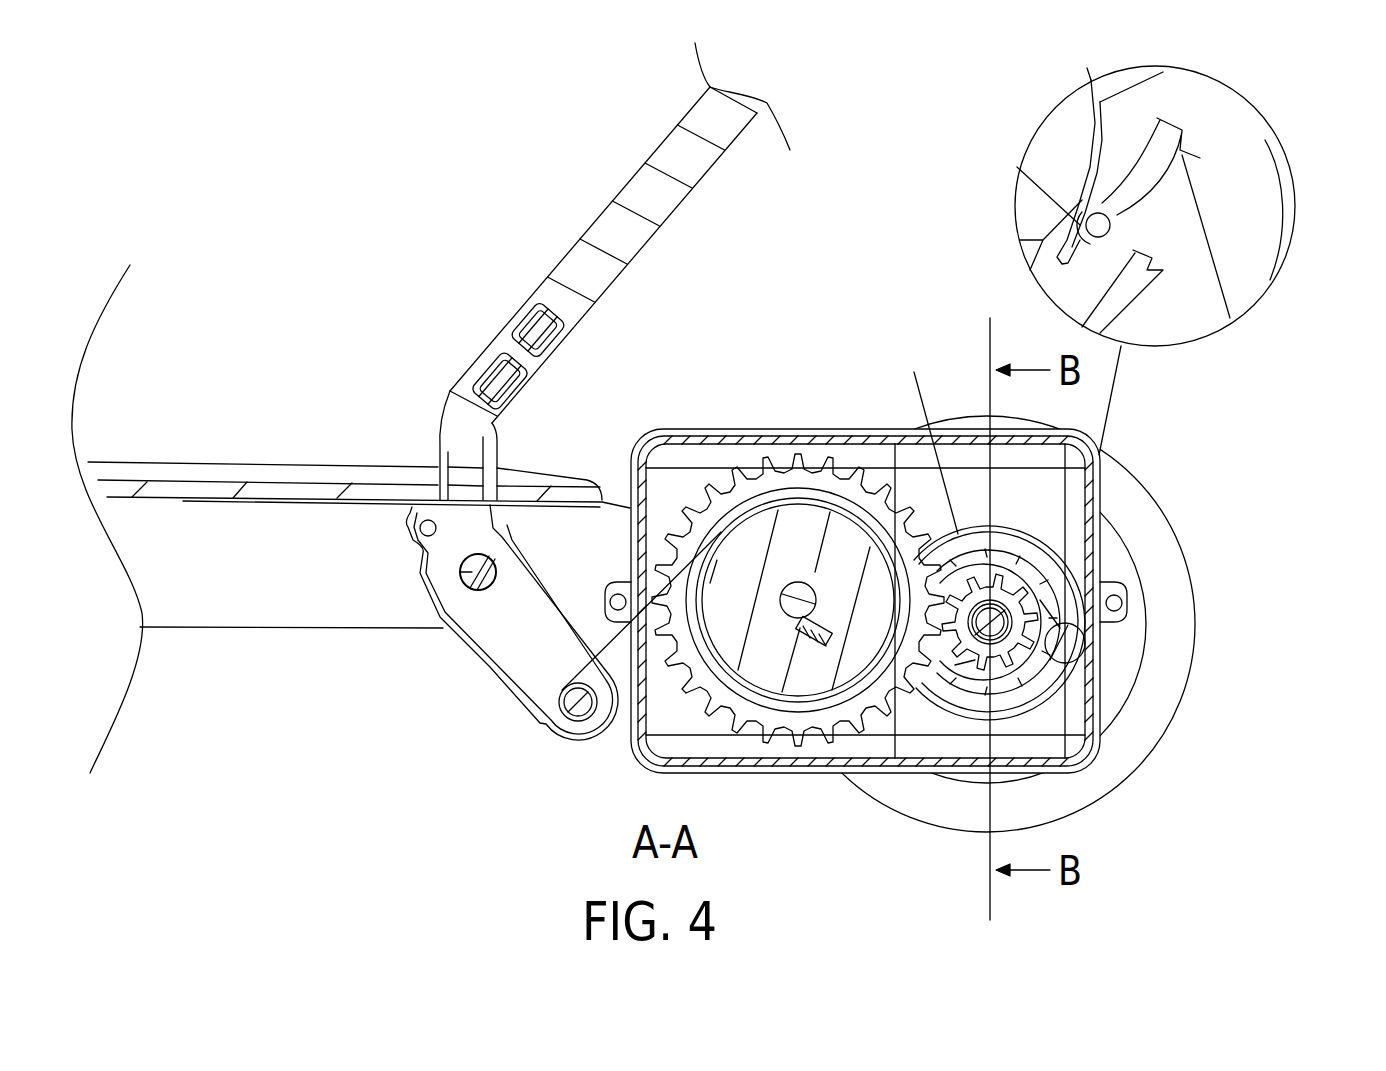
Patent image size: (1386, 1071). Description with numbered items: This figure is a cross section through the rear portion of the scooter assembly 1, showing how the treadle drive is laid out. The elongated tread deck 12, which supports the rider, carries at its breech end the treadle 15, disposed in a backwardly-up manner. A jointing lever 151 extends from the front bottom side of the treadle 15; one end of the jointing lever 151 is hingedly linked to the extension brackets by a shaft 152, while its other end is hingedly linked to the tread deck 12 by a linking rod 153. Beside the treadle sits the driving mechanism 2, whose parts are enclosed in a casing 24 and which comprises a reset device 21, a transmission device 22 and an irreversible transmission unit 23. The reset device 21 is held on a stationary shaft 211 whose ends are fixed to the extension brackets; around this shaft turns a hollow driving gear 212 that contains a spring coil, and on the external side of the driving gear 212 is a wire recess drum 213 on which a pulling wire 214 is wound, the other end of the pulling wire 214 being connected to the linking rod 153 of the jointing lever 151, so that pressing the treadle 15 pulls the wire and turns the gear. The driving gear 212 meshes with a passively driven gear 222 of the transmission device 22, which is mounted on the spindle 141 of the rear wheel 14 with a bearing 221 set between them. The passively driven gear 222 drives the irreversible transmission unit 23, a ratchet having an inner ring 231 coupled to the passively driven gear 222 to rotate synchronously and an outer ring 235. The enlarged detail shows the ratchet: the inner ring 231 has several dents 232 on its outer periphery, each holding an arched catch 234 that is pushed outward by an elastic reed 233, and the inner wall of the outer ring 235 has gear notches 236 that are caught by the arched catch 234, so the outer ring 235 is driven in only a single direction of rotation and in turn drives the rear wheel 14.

The scooter assembly 1 is at (147, 427).
The elongated tread deck 12 is at (267, 473).
The rear wheel 14 is at (1163, 580).
The spindle 141 is at (985, 614).
The treadle 15 is at (608, 225).
The jointing lever 151 is at (487, 662).
The shaft 152 is at (470, 575).
The linking rod 153 is at (573, 703).
The driving mechanism 2 is at (1116, 473).
The reset device 21 is at (733, 609).
The stationary shaft 211 is at (795, 612).
The hollow driving gear 212 is at (748, 462).
The wire recess drum 213 is at (720, 668).
The pulling wire 214 is at (675, 530).
The transmission device 22 is at (1071, 535).
The bearing 221 is at (997, 632).
The passively driven gear 222 is at (968, 657).
The irreversible transmission unit 23 is at (1037, 660).
The inner ring 231 is at (1075, 105).
The dents 232 is at (1122, 148).
The elastic reed 233 is at (1085, 207).
The arched catch 234 is at (1138, 190).
The outer ring 235 is at (1300, 97).
The gear notches 236 is at (1200, 158).
The casing 24 is at (825, 432).